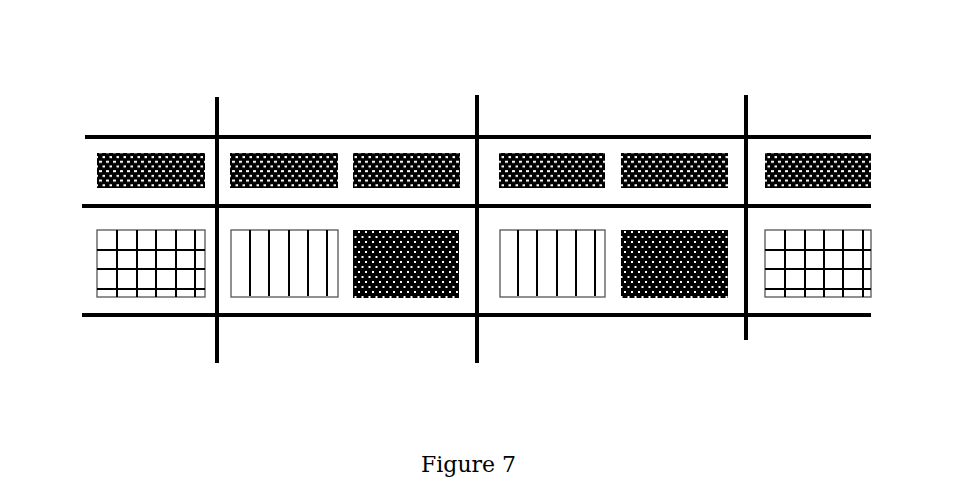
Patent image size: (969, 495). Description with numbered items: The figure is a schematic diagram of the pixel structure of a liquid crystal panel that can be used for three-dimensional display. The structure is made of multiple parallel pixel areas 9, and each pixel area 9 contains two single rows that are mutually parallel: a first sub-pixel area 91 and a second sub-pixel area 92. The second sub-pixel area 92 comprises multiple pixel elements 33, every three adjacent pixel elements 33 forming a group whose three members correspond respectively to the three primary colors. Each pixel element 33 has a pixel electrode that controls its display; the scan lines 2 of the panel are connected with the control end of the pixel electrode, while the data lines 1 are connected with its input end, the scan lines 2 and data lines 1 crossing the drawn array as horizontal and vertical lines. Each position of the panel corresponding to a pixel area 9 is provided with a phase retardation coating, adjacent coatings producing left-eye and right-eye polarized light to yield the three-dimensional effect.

The pixel area 9 is at (170, 97).
The data line 1 is at (217, 115).
The scan line 2 is at (93, 203).
The first sub-pixel area 91 is at (347, 147).
The second sub-pixel area 92 is at (489, 302).
The pixel element 33 is at (382, 302).